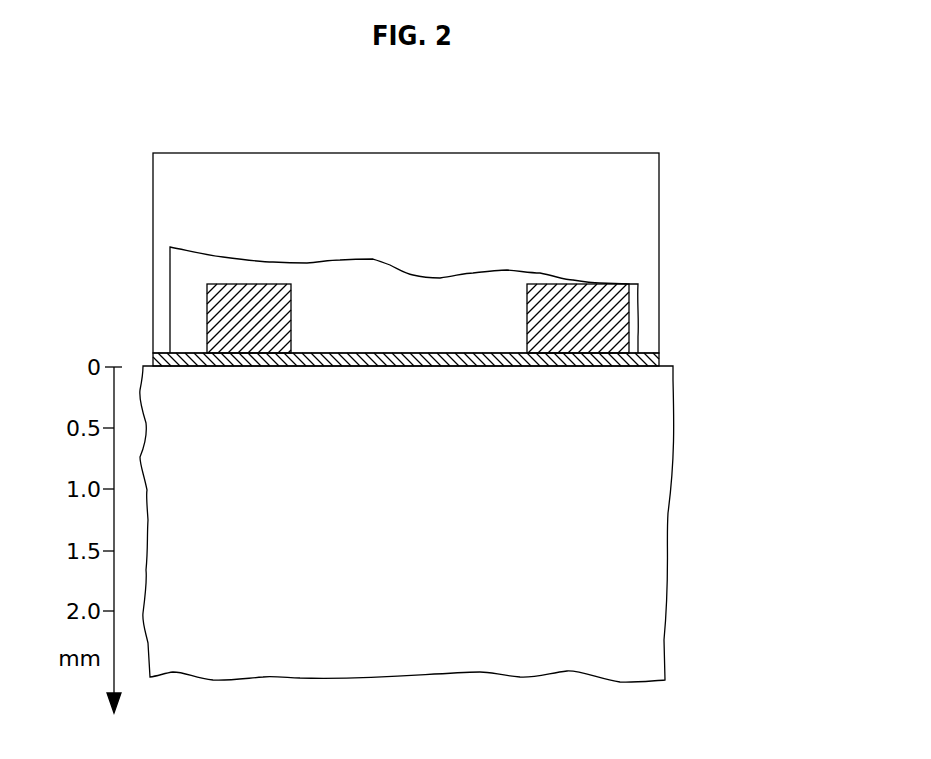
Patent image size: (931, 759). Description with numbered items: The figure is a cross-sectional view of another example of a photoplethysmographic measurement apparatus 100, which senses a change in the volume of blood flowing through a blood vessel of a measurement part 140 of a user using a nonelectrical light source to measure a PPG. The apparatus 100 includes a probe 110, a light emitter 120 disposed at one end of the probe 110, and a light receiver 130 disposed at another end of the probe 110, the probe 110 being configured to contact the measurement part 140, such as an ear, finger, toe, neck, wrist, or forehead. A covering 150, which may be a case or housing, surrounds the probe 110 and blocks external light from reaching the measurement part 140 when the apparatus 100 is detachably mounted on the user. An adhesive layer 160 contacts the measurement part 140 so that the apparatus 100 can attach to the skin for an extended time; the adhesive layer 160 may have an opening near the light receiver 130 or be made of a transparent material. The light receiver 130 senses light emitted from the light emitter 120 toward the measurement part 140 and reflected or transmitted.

The photoplethysmographic measurement apparatus 100 is at (385, 108).
The probe 110 is at (408, 287).
The light emitter 120 is at (230, 313).
The light receiver 130 is at (607, 316).
The measurement part 140 is at (645, 523).
The covering 150 is at (659, 204).
The adhesive layer 160 is at (656, 359).